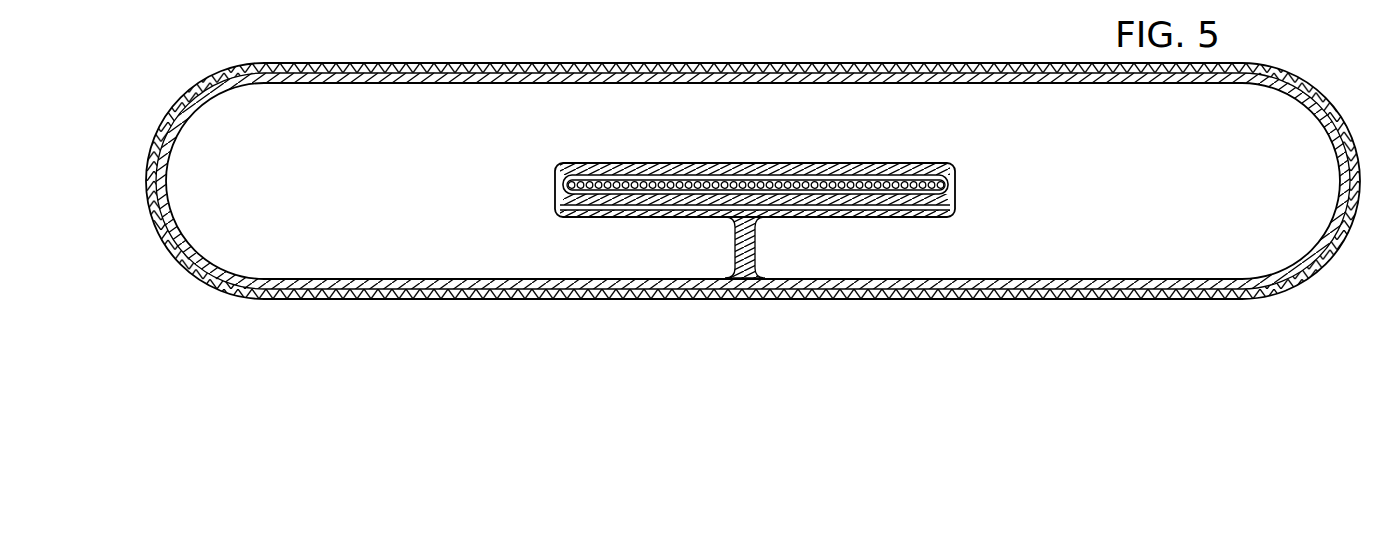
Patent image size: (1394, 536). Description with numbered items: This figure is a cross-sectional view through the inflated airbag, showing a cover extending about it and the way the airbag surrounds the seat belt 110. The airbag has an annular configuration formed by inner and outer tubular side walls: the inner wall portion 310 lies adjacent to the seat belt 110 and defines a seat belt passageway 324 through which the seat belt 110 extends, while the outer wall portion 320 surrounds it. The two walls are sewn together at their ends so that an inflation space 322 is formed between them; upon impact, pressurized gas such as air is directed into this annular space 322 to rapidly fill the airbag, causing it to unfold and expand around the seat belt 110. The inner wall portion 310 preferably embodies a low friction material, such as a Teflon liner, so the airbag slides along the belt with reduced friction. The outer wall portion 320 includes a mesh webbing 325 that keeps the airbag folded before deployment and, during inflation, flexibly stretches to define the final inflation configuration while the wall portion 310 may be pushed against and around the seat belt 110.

The seat belt 110 is at (660, 185).
The inner wall portion 310 is at (895, 203).
The outer wall portion 320 is at (997, 84).
The inflation space 322 is at (1173, 265).
The seat belt passageway 324 is at (830, 194).
The mesh webbing 325 is at (918, 63).